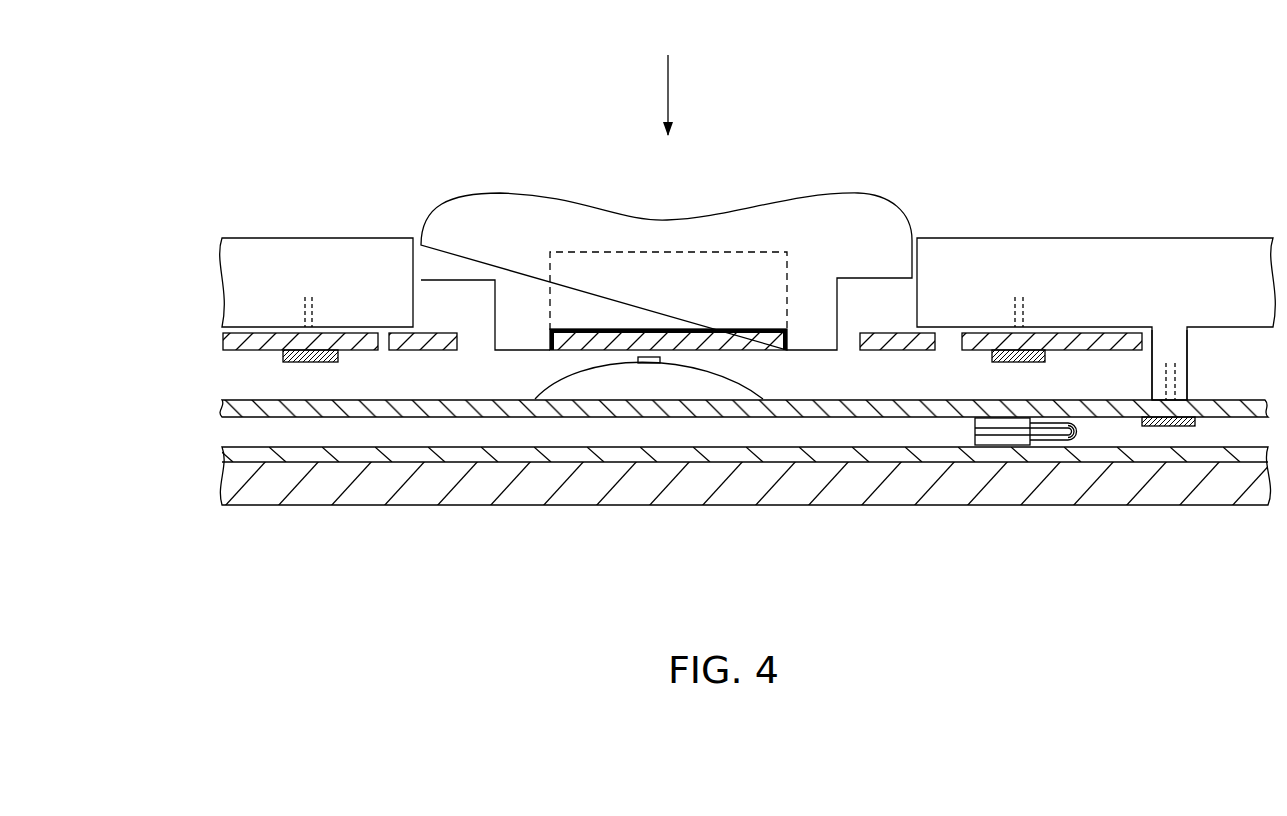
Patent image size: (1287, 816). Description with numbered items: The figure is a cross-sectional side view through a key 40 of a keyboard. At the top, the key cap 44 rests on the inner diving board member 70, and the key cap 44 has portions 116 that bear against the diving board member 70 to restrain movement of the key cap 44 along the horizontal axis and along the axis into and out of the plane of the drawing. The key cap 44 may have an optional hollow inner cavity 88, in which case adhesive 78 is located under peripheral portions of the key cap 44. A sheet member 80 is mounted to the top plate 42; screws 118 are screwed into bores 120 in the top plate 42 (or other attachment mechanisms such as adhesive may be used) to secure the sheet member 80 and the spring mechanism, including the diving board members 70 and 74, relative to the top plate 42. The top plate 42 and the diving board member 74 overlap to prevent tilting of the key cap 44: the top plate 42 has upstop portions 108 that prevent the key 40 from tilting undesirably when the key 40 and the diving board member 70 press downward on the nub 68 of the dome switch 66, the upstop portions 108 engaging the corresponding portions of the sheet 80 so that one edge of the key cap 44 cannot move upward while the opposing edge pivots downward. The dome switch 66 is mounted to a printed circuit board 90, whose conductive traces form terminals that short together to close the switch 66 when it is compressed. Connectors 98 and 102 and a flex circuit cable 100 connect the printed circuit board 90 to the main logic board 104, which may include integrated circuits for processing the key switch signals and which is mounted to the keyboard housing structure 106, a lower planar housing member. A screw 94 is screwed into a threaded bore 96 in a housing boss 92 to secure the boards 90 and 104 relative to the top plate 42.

The key 40 is at (829, 110).
The top plate 42 is at (307, 252).
The key cap 44 is at (863, 208).
The dome switch 66 is at (753, 378).
The nub 68 is at (633, 355).
The inner diving board member 70 is at (622, 338).
The diving board member 74 is at (405, 348).
The adhesive 78 is at (543, 330).
The sheet member 80 is at (297, 337).
The cavity 88 is at (707, 252).
The printed circuit board 90 is at (240, 405).
The housing boss 92 is at (1180, 352).
The screw 94 is at (1173, 427).
The threaded bore 96 is at (1162, 380).
The connector 98 is at (977, 420).
The flex circuit cable 100 is at (1077, 430).
The connector 102 is at (990, 443).
The main logic board 104 is at (223, 452).
The keyboard housing structure 106 is at (540, 485).
The upstop portions 108 is at (403, 317).
The portions 116 is at (473, 337).
The screws 118 is at (307, 360).
The bores 120 is at (303, 298).